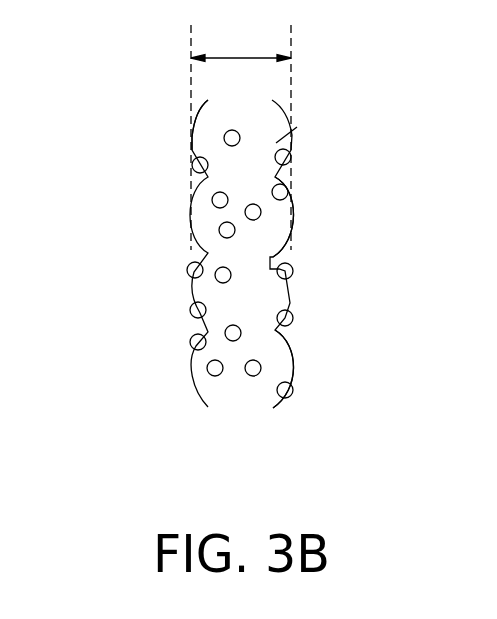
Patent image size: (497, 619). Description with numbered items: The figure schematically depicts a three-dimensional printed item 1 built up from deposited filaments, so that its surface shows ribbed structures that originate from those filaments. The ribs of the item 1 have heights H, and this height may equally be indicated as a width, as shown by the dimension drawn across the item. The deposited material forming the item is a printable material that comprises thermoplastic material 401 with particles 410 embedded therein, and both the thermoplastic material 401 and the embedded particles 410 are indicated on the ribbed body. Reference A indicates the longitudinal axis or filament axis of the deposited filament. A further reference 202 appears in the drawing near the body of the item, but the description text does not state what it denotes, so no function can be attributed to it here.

The 3D item 1 is at (366, 162).
The strip layer 202 is at (126, 248).
The thermoplastic material 401 is at (272, 211).
The particles 410 is at (207, 370).
The longitudinal axis A is at (295, 188).
The height H is at (241, 137).